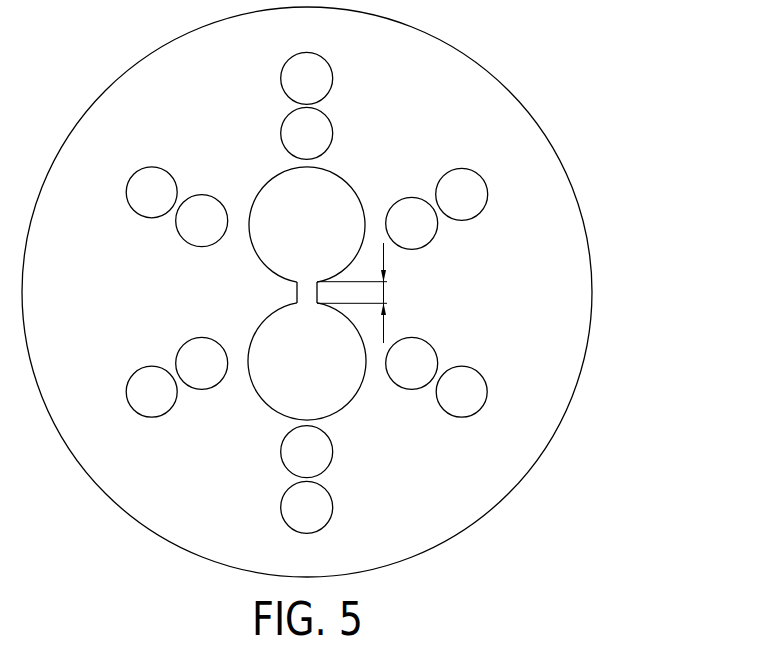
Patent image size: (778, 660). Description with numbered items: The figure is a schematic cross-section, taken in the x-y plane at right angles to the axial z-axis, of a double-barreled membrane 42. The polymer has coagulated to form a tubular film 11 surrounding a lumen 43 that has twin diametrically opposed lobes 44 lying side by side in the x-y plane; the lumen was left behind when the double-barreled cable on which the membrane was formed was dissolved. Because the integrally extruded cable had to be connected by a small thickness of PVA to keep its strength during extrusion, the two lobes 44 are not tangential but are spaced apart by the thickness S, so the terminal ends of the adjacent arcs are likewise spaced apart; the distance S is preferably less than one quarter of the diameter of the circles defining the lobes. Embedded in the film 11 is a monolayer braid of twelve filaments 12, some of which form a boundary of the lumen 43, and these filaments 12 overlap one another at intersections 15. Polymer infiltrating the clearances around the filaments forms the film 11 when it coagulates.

The tubular film 11 is at (592, 282).
The double-barreled membrane 42 is at (612, 346).
The filaments 12 is at (462, 168).
The intersections 15 is at (158, 351).
The lumen 43 is at (311, 291).
The lobes 44 is at (273, 173).
The thickness S is at (385, 292).